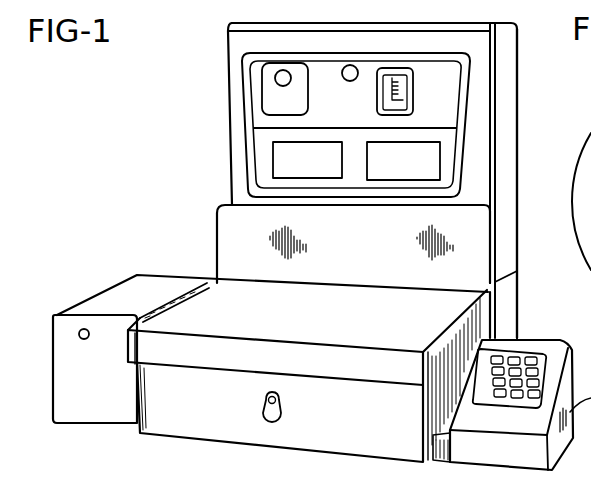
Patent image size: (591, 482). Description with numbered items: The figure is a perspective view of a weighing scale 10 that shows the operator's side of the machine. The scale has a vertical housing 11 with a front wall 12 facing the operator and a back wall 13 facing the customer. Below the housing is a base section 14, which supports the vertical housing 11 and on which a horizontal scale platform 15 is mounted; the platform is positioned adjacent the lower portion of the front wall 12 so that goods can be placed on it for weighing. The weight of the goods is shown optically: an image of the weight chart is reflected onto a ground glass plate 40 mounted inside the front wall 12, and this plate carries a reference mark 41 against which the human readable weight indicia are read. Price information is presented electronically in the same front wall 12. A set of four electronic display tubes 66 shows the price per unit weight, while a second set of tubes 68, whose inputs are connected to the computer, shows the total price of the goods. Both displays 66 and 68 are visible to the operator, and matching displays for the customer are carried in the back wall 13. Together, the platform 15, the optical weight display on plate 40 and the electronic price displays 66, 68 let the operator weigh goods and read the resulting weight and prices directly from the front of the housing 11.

The weighing scale 10 is at (201, 235).
The vertical housing 11 is at (232, 35).
The front wall 12 is at (478, 186).
The back wall 13 is at (518, 70).
The base section 14 is at (300, 436).
The horizontal scale platform 15 is at (216, 334).
The ground glass plate 40 is at (409, 112).
The reference mark 41 is at (381, 101).
The electronic display tubes 66 is at (380, 176).
The electronic display tubes 68 is at (285, 176).